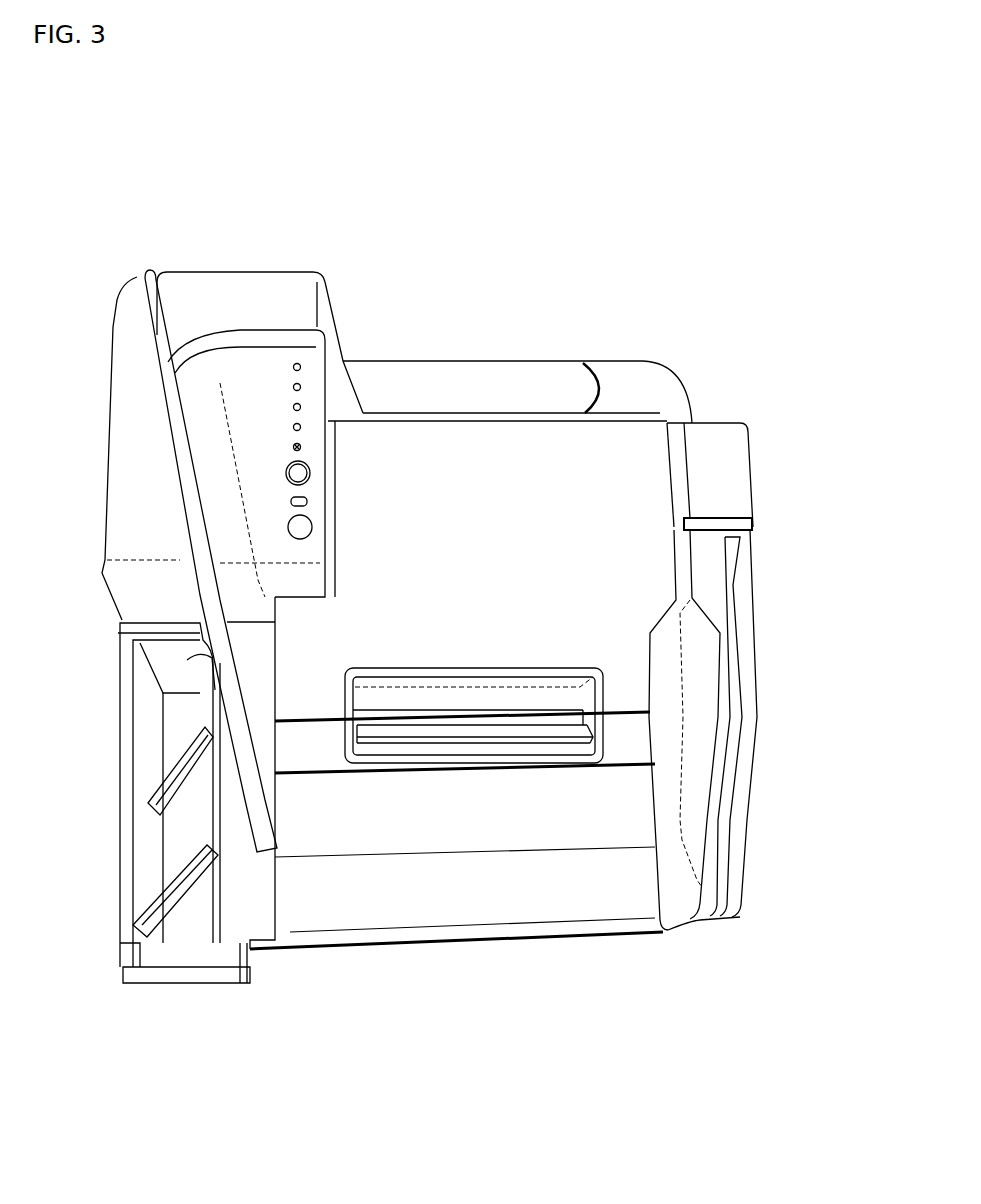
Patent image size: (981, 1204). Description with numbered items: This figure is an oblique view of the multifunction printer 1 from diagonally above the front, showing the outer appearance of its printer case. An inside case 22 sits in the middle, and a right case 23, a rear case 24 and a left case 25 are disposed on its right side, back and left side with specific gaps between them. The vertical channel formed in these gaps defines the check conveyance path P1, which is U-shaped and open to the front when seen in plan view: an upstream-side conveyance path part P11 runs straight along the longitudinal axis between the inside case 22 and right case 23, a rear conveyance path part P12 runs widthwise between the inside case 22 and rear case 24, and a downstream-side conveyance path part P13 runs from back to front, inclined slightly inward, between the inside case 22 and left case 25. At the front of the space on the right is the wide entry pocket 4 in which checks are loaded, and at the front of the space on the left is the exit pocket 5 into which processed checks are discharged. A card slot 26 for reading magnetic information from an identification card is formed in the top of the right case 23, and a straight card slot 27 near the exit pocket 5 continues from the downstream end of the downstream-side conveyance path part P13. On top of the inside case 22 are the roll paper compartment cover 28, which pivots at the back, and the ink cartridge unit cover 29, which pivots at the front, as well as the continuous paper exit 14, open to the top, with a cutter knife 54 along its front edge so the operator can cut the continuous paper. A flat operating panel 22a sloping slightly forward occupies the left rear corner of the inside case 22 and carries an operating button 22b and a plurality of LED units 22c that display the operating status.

The multifunction printer 1 is at (689, 266).
The entry pocket 4 is at (680, 802).
The exit pocket 5 is at (165, 753).
The continuous paper exit 14 is at (417, 716).
The inside case 22 is at (489, 934).
The operating panel 22a is at (224, 447).
The operating button 22b is at (303, 474).
The LED units 22c is at (300, 447).
The right case 23 is at (766, 771).
The rear case 24 is at (510, 357).
The left case 25 is at (110, 710).
The card slot 26 is at (747, 669).
The card slot 27 is at (243, 800).
The roll paper compartment cover 28 is at (577, 516).
The ink cartridge unit cover 29 is at (591, 883).
The cutter knife 54 is at (467, 738).
The check conveyance path P1 is at (566, 416).
The upstream-side conveyance path part P11 is at (677, 497).
The rear conveyance path part P12 is at (470, 413).
The downstream-side conveyance path part P13 is at (190, 468).